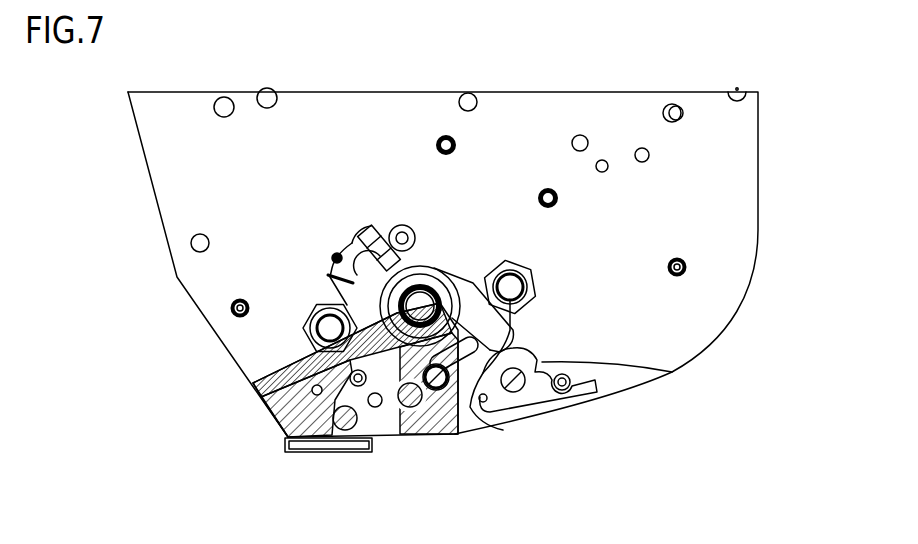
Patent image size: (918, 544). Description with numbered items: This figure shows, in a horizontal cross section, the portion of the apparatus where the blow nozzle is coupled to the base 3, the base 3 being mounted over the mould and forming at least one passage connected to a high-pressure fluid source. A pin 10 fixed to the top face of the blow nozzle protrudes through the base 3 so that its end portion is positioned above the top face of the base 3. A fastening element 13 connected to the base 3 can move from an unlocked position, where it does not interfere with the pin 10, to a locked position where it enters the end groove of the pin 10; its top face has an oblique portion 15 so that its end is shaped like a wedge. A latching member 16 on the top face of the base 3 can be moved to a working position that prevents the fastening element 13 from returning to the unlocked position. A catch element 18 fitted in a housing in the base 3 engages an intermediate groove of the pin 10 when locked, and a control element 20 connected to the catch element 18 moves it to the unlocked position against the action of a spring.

The base 3 is at (712, 185).
The pin 10 is at (503, 430).
The fastening element 13 is at (328, 275).
The oblique portion 15 is at (367, 236).
The latching member 16 is at (665, 372).
The catch element 18 is at (363, 413).
The control element 20 is at (285, 452).